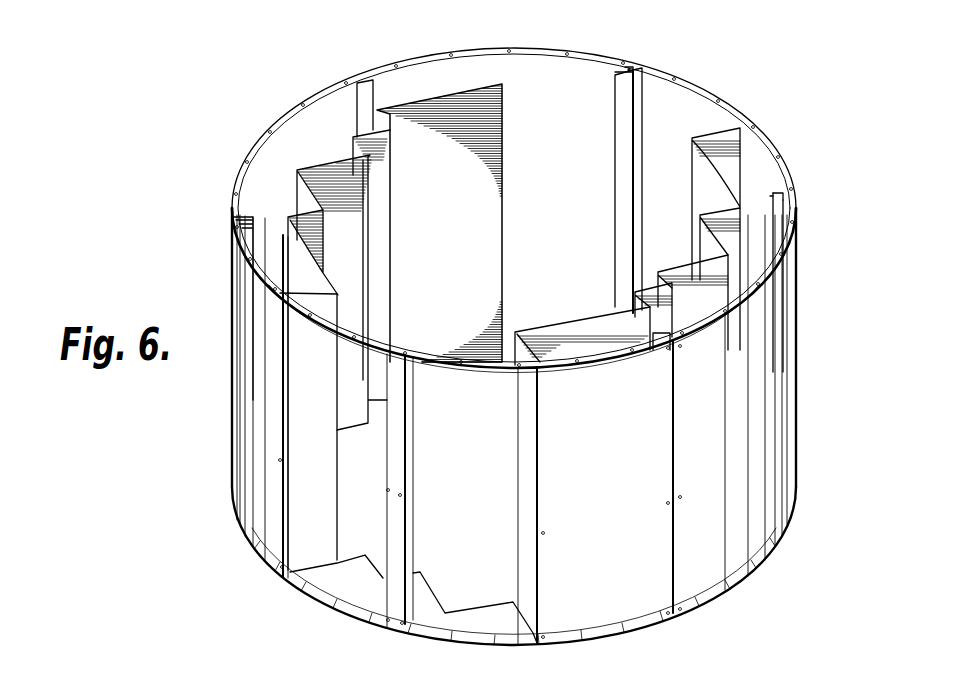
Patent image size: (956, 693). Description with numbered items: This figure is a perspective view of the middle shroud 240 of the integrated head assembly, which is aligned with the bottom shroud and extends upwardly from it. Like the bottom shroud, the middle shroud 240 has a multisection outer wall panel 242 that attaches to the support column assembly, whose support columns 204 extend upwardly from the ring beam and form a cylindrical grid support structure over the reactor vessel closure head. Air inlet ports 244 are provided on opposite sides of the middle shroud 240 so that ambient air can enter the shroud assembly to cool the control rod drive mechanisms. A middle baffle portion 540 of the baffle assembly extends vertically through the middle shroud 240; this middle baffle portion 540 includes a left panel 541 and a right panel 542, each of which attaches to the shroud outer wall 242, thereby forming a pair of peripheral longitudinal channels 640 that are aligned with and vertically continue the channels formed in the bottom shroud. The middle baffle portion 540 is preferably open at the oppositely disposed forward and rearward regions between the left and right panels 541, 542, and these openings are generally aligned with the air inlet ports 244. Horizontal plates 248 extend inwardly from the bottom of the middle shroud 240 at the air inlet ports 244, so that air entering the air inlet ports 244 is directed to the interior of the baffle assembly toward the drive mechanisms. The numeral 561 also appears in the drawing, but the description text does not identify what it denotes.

The middle shroud 240 is at (206, 140).
The outer wall panel 242 is at (760, 382).
The air inlet ports 244 is at (572, 88).
The horizontal plates 248 is at (512, 328).
The support columns 204 is at (355, 108).
The middle baffle portion 540 is at (430, 97).
The left panel 541 is at (345, 262).
The right panel 542 is at (745, 305).
The peripheral longitudinal channels 640 is at (276, 153).
The base element 561 is at (202, 688).